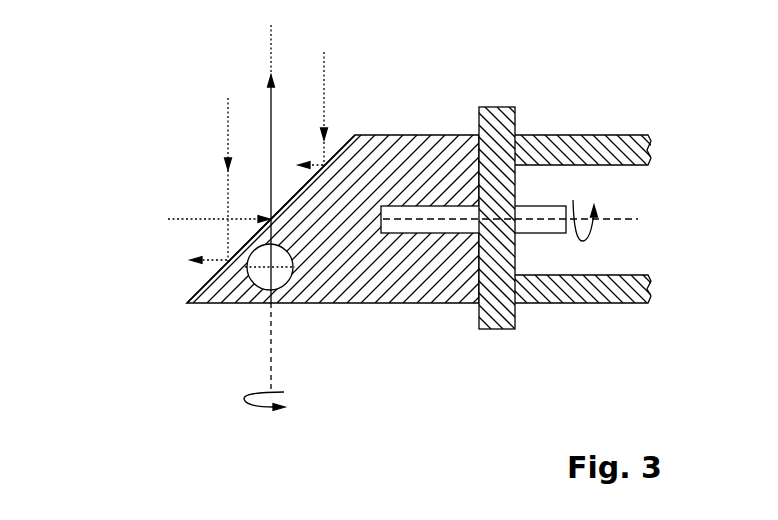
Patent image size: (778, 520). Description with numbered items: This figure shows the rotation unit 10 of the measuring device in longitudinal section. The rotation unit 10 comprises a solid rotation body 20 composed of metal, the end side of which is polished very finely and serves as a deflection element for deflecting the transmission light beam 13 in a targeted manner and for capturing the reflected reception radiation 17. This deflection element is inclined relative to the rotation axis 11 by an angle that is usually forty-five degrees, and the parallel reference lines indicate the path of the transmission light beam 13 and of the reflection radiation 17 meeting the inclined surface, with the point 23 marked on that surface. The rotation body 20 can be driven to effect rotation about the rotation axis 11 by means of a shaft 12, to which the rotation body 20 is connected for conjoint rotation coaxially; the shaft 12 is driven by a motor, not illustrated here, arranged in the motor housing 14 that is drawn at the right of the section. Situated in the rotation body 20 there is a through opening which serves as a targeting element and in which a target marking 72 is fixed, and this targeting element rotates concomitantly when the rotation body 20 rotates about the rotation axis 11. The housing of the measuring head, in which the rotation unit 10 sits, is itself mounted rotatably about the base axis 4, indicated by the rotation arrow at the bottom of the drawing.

The base axis 4 is at (263, 357).
The rotation unit 10 is at (435, 117).
The rotation axis 11 is at (607, 218).
The shaft 12 is at (543, 237).
The transmission light beam 13 is at (270, 92).
The motor housing 14 is at (618, 328).
The reflection radiation 17 is at (227, 118).
The rotation body 20 is at (333, 256).
The edge point of the inclined surface 23 is at (258, 210).
The target marking 72 is at (287, 292).